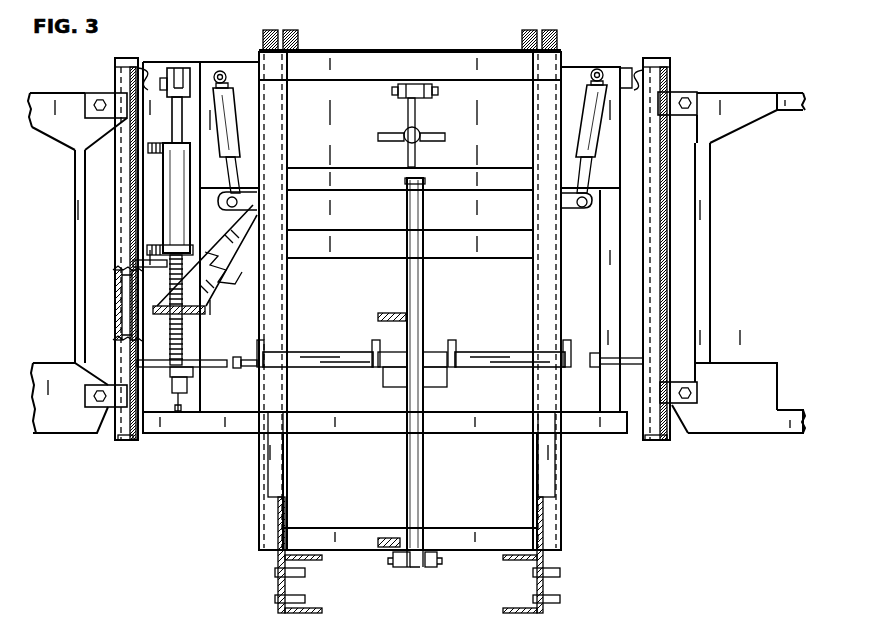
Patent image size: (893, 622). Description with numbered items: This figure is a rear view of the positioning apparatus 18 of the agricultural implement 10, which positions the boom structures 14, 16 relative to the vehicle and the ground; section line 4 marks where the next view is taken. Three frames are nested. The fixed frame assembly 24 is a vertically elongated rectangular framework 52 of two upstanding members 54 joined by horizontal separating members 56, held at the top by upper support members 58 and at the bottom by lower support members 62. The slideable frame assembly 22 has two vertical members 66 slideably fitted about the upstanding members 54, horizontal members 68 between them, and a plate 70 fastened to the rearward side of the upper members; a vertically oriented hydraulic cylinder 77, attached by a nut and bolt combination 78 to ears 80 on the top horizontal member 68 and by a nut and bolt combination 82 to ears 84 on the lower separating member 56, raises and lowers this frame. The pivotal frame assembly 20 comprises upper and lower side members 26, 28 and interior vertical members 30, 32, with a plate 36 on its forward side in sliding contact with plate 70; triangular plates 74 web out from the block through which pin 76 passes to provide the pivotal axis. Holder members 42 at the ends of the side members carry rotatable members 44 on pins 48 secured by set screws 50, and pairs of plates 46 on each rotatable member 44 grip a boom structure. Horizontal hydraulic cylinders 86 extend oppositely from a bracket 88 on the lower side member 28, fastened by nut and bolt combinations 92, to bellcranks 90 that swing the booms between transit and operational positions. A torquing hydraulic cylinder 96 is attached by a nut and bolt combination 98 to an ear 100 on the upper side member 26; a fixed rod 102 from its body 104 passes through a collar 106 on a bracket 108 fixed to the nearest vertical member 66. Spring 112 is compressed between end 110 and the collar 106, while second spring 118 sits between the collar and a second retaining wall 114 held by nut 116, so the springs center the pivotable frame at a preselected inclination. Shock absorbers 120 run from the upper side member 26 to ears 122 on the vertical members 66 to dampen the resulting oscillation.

The section line 4- 4 is at (793, 621).
The agricultural implement 10 is at (180, 517).
The boom structure 14 is at (62, 478).
The boom structure 16 is at (750, 490).
The positioning apparatus 18 is at (222, 468).
The pivotal frame assembly 20 is at (247, 435).
The slideable frame assembly 22 is at (258, 52).
The fixed frame assembly 24 is at (263, 518).
The upper side member 26 is at (630, 67).
The lower side member 28 is at (348, 435).
The interior vertical member 30 is at (610, 410).
The interior vertical member 32 is at (205, 415).
The plate 36 is at (577, 80).
The holder member 42 is at (115, 65).
The rotatable member 44 is at (110, 222).
The plate 46 is at (95, 95).
The pin 48 is at (128, 58).
The set screw 50 is at (125, 78).
The rectangular framework 52 is at (543, 280).
The upstanding member 54 is at (270, 285).
The horizontal separating member 56 is at (452, 33).
The upper support member 58 is at (275, 30).
The lower support member 62 is at (277, 557).
The vertical member 66 is at (277, 128).
The horizontal member 68 is at (372, 53).
The plate 70 is at (410, 66).
The triangular plate 74 is at (405, 157).
The pin 76 is at (420, 130).
The vertically oriented hydraulic cylinder 77 is at (407, 477).
The nut and bolt combination 78 is at (397, 92).
The ears 80 is at (400, 100).
The nut and bolt combination 82 is at (432, 558).
The ears 84 is at (427, 567).
The horizontal hydraulic cylinder 86 is at (313, 360).
The bracket 88 is at (427, 388).
The bellcrank 90 is at (173, 370).
The nut and bolt combination 92 is at (446, 352).
The torquing hydraulic cylinder 96 is at (167, 182).
The nut and bolt combination 98 is at (165, 83).
The ear 100 is at (177, 67).
The fixed rod 102 is at (175, 410).
The body 104 is at (173, 200).
The collar 106 is at (153, 310).
The bracket 108 is at (222, 290).
The end 110 is at (167, 262).
The spring 112 is at (173, 277).
The second retaining wall 114 is at (193, 370).
The nut 116 is at (187, 387).
The second spring 118 is at (173, 333).
The shock absorber 120 is at (225, 138).
The ears 122 is at (252, 203).